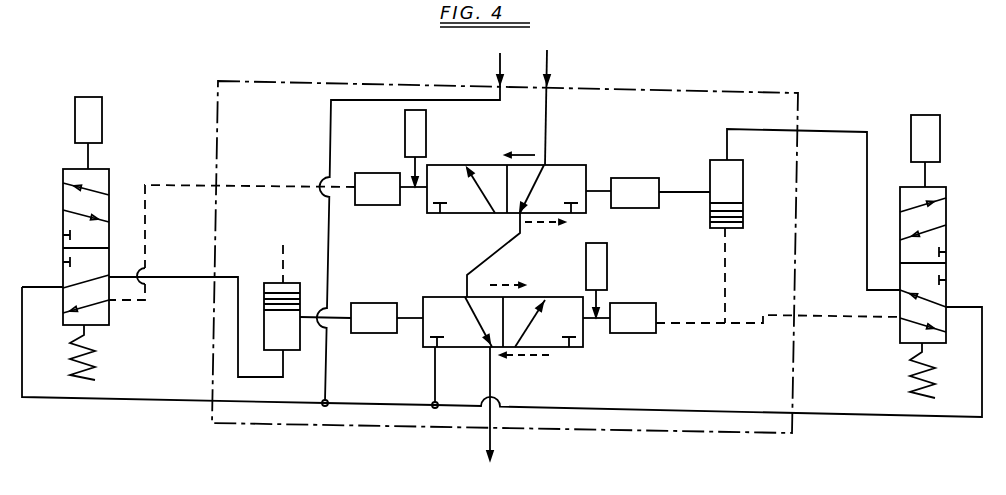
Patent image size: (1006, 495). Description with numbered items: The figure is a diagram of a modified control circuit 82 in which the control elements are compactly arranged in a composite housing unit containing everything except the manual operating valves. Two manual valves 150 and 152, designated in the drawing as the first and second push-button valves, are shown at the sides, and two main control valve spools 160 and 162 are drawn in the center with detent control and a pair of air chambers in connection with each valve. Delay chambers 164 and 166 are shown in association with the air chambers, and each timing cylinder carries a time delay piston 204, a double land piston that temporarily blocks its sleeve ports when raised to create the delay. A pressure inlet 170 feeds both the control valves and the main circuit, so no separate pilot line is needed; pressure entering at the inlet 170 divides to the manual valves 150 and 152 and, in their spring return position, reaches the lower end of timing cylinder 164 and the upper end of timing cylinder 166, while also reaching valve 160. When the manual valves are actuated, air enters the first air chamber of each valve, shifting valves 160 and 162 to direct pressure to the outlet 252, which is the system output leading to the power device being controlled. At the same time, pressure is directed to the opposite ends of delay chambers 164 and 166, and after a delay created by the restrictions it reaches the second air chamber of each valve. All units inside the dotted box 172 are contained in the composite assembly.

The pneumatic control circuit 82 is at (499, 231).
The manual valve 150 is at (63, 254).
The manual valve 152 is at (944, 191).
The main control valve spool 160 is at (443, 297).
The main control valve spool 162 is at (487, 165).
The delay chamber 164 is at (291, 352).
The delay chamber 166 is at (722, 160).
The pressure inlet 170 is at (492, 57).
The dotted box 172 is at (268, 55).
The time delay piston 204 is at (299, 304).
The outlet 252 is at (558, 55).